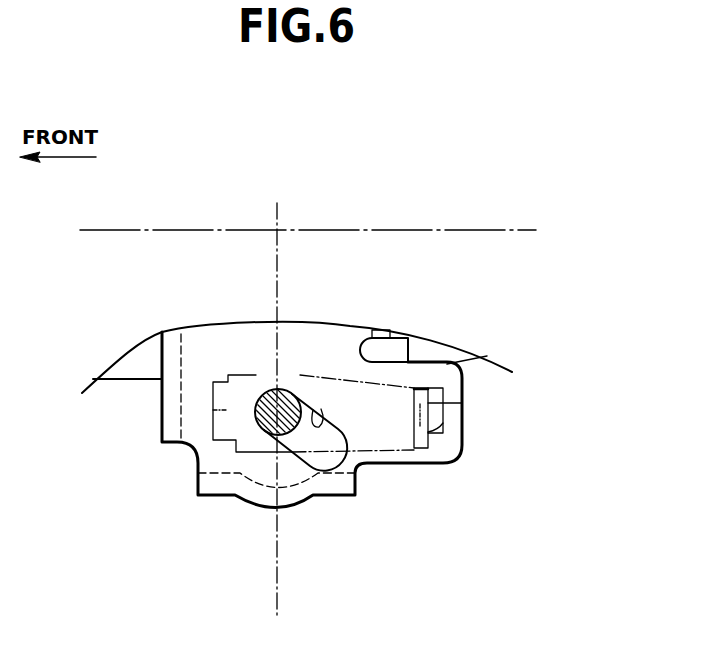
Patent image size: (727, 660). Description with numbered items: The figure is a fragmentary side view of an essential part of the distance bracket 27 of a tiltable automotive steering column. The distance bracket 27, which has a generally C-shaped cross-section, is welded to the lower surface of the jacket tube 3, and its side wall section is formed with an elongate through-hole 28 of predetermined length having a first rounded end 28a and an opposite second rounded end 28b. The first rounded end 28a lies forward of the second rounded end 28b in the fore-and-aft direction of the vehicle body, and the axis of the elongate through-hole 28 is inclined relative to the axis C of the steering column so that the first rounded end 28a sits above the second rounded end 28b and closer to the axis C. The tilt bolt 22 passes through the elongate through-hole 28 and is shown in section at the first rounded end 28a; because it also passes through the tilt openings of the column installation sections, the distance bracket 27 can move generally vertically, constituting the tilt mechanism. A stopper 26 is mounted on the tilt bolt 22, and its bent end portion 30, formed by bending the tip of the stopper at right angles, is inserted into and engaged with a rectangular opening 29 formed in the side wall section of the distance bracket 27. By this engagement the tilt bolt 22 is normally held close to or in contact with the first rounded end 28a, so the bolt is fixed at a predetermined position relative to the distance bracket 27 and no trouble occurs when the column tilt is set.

The jacket tube 3 is at (128, 372).
The tilt bolt 22 is at (267, 422).
The stopper 26 is at (400, 452).
The distance bracket 27 is at (343, 345).
The elongate through-hole 28 is at (306, 400).
The first rounded end 28a is at (262, 392).
The second rounded end 28b is at (344, 442).
The rectangular opening 29 is at (445, 424).
The bent end portion 30 is at (443, 404).
The axis of the steering column C is at (487, 228).